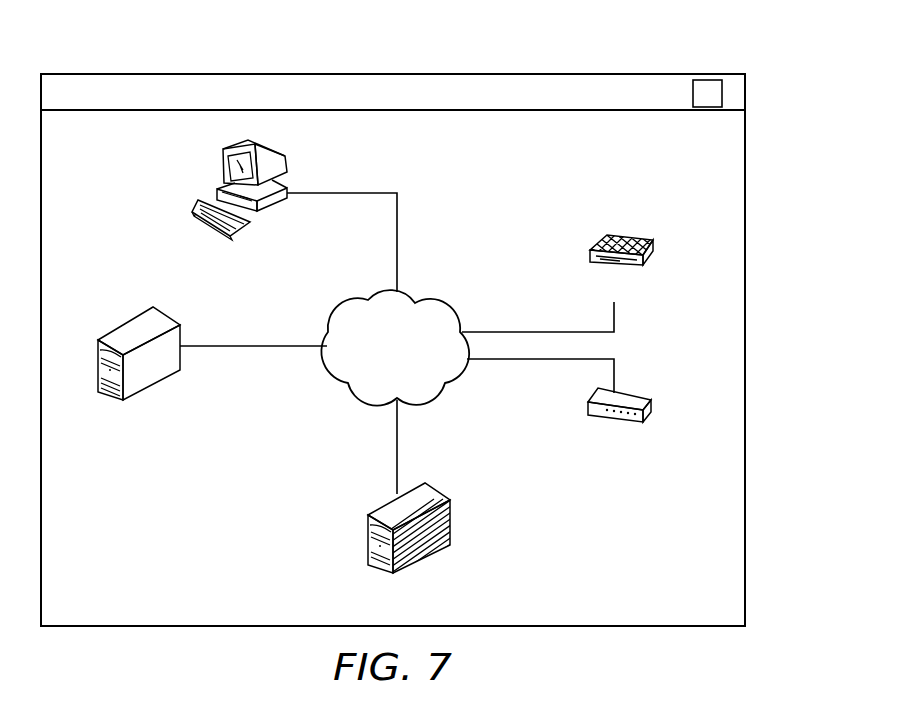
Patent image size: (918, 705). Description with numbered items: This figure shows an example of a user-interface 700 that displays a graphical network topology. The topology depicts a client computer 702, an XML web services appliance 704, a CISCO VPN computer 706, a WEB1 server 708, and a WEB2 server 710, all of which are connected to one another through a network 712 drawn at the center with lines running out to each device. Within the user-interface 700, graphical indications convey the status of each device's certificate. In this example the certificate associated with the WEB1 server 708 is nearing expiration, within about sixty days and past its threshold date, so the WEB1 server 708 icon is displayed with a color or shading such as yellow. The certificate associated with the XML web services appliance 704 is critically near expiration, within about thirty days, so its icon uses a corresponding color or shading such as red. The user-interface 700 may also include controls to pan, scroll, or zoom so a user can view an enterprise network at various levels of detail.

The user-interface 700 is at (675, 62).
The client computer 702 is at (271, 150).
The XML web services appliance 704 is at (641, 238).
The CISCO VPN computer 706 is at (642, 394).
The WEB1 server 708 is at (438, 490).
The WEB2 server 710 is at (167, 316).
The network 712 is at (446, 303).